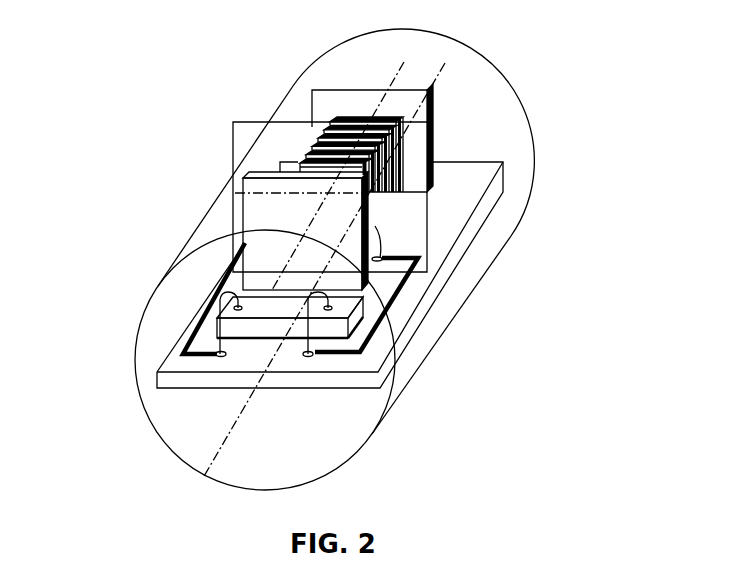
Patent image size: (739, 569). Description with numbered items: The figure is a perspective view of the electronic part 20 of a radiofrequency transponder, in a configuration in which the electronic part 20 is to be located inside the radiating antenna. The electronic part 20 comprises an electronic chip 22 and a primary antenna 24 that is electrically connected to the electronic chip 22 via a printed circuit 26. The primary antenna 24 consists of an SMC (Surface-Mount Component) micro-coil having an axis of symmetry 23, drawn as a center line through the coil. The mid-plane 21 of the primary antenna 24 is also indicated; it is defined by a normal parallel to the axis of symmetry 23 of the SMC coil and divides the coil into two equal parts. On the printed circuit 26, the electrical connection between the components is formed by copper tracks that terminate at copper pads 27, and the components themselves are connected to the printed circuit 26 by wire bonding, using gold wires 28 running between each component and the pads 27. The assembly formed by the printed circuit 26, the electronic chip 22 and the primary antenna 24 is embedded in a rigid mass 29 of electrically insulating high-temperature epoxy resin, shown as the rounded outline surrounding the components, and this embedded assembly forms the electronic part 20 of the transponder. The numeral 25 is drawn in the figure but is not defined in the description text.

The electronic part 20 is at (198, 162).
The mid-plane 21 is at (425, 228).
The electronic chip 22 is at (263, 305).
The axis of symmetry 23 is at (381, 107).
The primary antenna 24 is at (400, 147).
The cover block 25 is at (301, 231).
The printed circuit 26 is at (173, 358).
The copper pads 27 is at (222, 357).
The gold wires 28 is at (220, 330).
The rigid mass 29 is at (513, 150).